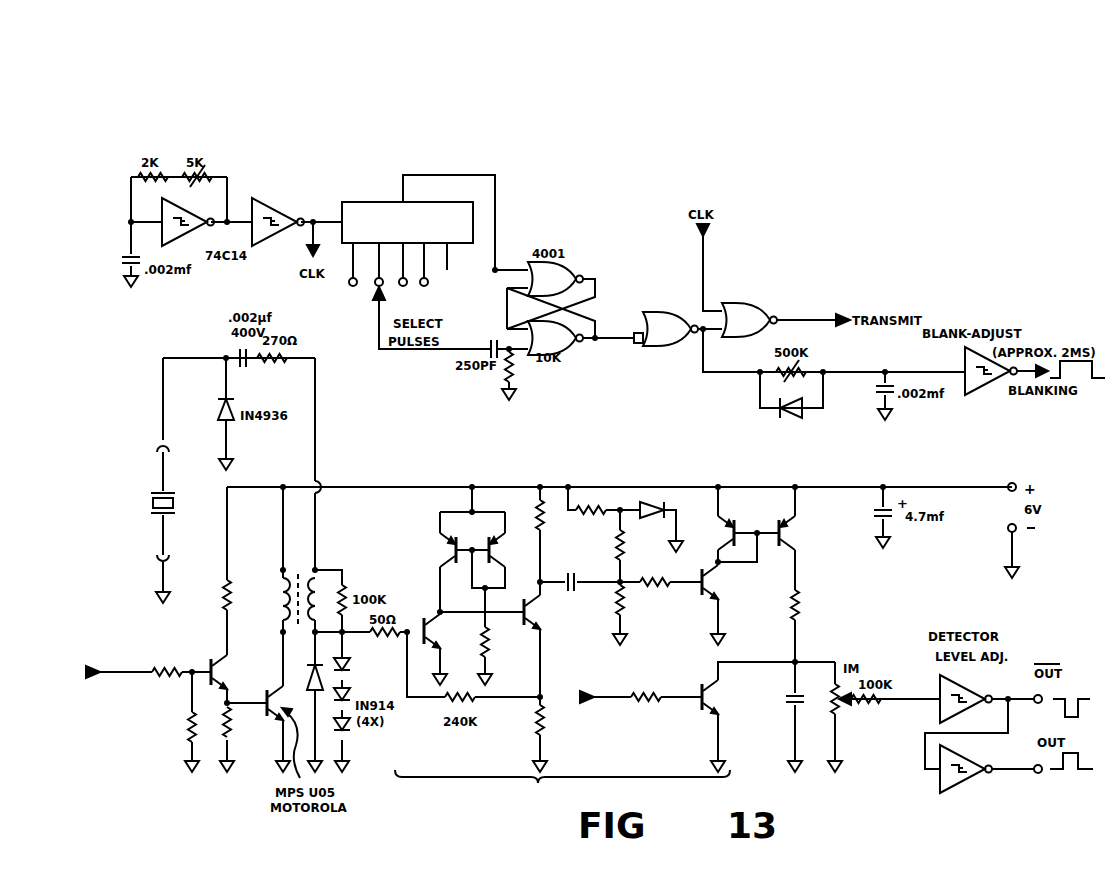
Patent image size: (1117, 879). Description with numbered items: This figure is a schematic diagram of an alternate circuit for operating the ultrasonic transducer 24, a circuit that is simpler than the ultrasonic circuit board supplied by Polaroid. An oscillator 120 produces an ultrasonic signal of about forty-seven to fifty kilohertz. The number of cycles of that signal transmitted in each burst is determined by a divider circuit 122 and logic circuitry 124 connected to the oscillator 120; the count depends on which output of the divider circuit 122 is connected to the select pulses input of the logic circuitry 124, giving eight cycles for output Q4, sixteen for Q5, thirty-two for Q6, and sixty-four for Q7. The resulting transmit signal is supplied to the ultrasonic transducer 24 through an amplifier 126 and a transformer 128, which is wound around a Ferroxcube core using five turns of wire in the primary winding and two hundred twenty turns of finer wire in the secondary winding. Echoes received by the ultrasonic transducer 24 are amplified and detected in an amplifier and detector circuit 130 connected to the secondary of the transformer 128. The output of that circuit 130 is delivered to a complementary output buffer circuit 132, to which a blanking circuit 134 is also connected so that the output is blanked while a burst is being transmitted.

The ultrasonic transducer 24 is at (176, 504).
The oscillator 120 is at (262, 200).
The divider circuit 122 is at (379, 200).
The logic circuitry 124 is at (658, 350).
The amplifier 126 is at (210, 740).
The transformer 128 is at (281, 572).
The amplifier and detector circuit 130 is at (618, 646).
The complementary output buffer circuit 132 is at (1008, 733).
The blanking circuit 134 is at (722, 710).